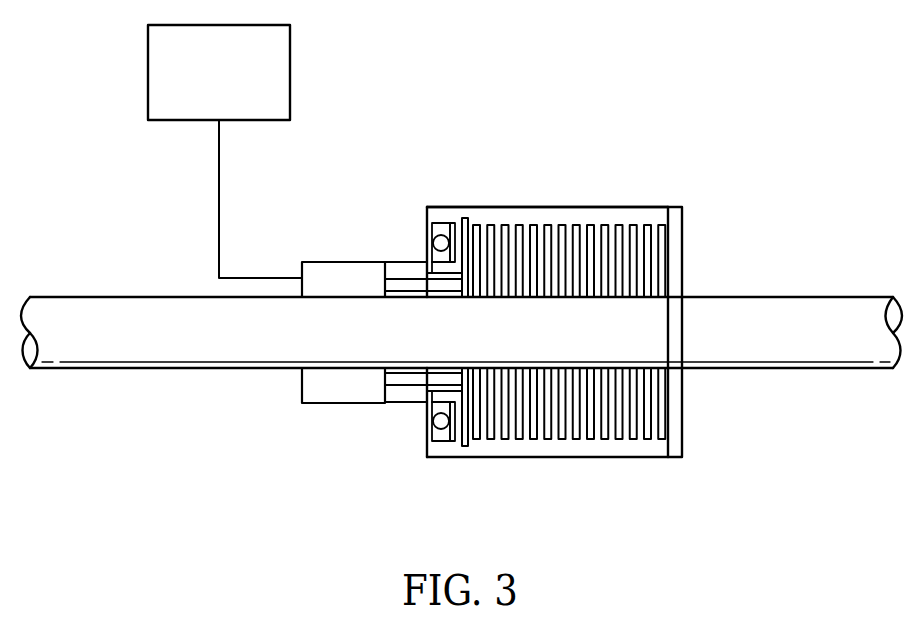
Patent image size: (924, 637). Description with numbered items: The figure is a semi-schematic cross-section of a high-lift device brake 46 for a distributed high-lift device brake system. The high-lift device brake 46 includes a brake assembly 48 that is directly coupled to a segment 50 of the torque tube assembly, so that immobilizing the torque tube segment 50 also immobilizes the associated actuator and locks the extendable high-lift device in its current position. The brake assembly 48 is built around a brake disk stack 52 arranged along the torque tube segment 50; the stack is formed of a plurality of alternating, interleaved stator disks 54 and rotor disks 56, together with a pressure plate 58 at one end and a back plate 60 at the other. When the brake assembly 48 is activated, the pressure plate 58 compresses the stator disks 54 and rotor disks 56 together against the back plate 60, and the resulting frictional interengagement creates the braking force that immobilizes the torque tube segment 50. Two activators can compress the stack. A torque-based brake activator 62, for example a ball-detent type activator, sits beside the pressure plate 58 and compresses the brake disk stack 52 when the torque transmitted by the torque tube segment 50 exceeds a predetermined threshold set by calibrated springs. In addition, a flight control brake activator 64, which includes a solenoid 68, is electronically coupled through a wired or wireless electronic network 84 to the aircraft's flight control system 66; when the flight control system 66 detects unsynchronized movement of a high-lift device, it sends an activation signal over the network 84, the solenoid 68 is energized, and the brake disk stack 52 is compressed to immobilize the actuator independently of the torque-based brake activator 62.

The high-lift device brake 46 is at (586, 131).
The brake assembly 48 is at (692, 404).
The segment of torque tube assembly 50 is at (125, 370).
The brake disk stack 52 is at (608, 208).
The stator disks 54 is at (505, 440).
The rotor disks 56 is at (662, 440).
The pressure plate 58 is at (465, 446).
The back plate 60 is at (683, 252).
The torque-based brake activator 62 is at (440, 208).
The flight control brake activator 64 is at (337, 270).
The flight control system 66 is at (147, 72).
The solenoid 68 is at (407, 277).
The electronic network 84 is at (218, 200).